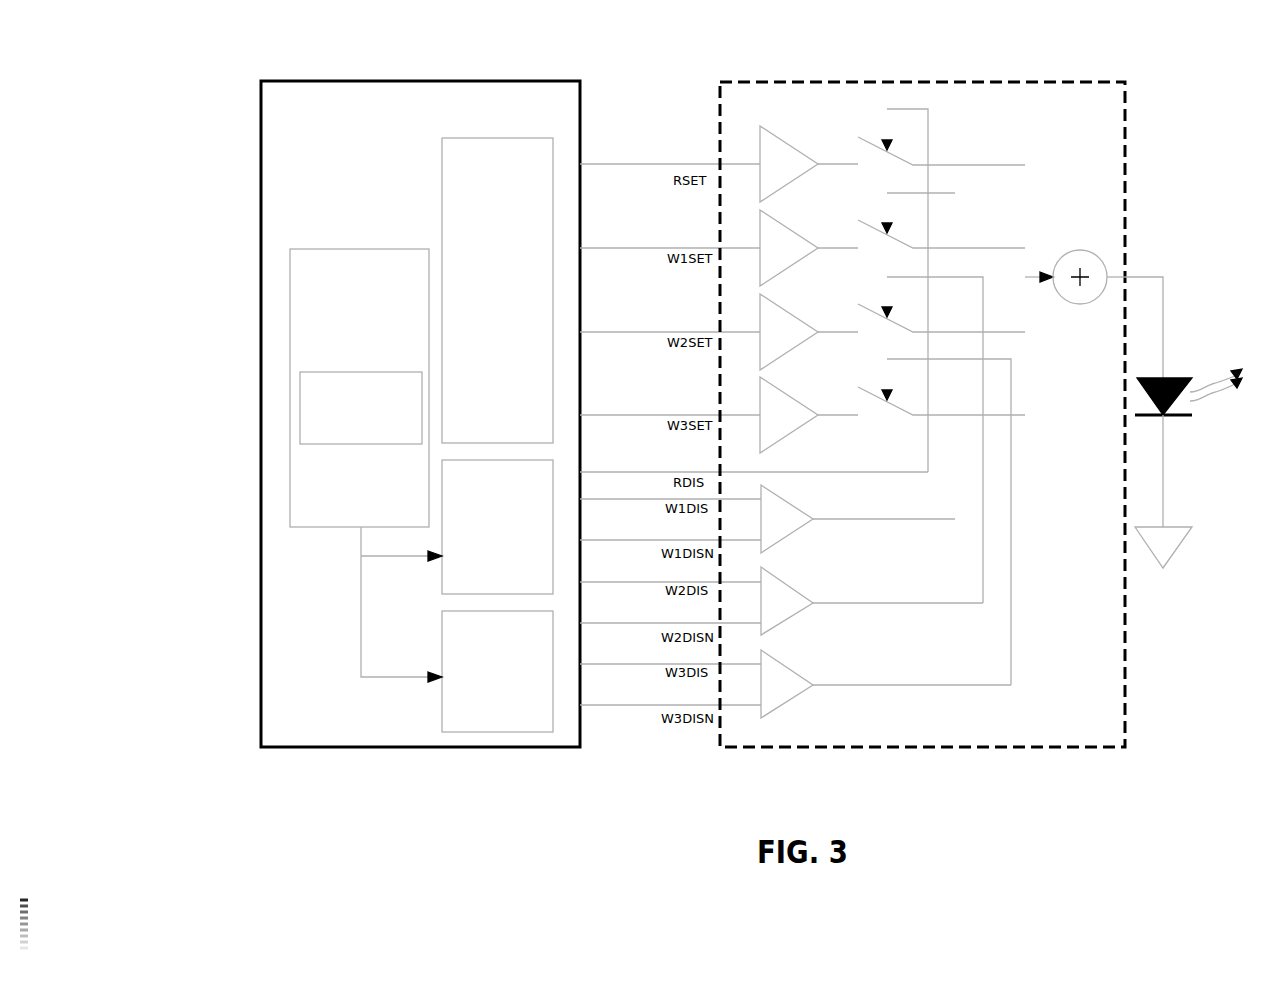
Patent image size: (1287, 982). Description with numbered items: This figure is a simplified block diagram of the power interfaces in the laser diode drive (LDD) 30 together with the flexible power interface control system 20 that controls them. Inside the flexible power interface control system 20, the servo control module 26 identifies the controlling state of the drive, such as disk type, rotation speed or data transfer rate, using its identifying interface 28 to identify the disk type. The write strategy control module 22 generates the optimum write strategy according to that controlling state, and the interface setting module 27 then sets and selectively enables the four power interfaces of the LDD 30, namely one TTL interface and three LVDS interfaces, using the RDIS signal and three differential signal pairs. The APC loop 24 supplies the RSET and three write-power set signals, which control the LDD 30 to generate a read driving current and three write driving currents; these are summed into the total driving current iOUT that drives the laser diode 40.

The flexible power interface control system 20 is at (455, 81).
The write strategy control module 22 is at (442, 573).
The automatic power control (APC) loop 24 is at (442, 170).
The servo control module 26 is at (290, 264).
The interface setting module 27 is at (442, 695).
The identifying interface 28 is at (300, 418).
The laser diode drive (LDD) 30 is at (1125, 92).
The laser diode 40 is at (1180, 418).